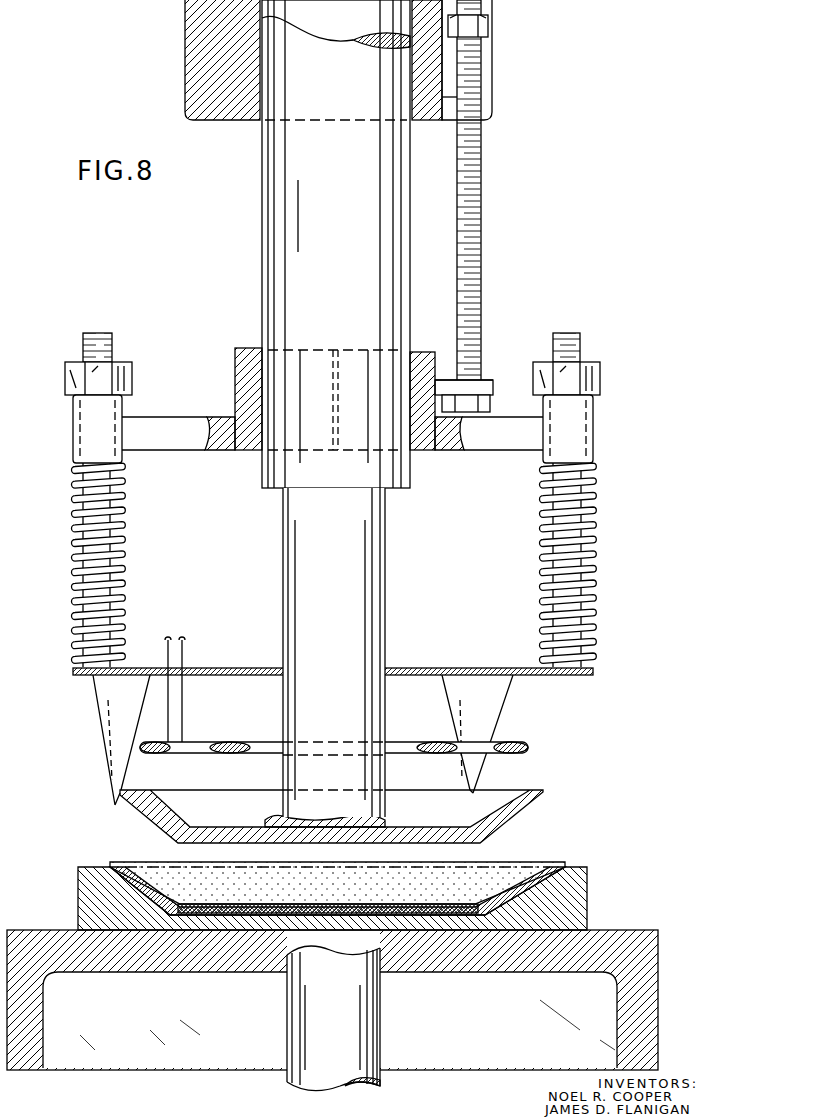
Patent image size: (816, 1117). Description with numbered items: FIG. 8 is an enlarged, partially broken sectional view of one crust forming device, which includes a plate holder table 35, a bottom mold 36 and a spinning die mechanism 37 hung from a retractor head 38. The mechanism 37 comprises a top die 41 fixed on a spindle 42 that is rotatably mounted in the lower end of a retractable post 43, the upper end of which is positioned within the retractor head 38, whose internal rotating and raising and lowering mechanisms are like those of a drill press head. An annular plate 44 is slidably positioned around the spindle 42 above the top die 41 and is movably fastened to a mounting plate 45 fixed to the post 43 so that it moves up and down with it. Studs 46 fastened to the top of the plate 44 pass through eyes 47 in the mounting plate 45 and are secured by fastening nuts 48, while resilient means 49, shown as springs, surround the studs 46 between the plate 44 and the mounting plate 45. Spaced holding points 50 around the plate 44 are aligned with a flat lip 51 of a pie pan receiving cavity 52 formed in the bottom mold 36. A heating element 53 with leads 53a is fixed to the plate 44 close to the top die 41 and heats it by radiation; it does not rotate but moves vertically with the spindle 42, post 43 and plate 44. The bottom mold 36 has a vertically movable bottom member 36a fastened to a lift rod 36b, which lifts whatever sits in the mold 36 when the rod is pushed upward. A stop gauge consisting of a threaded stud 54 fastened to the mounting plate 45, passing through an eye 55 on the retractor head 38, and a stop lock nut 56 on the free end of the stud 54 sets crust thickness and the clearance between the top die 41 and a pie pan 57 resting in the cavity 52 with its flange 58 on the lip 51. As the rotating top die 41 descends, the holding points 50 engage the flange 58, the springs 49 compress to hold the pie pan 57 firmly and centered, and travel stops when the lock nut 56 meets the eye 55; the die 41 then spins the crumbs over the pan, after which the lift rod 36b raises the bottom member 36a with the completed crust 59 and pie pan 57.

The plate holder table 35 is at (658, 950).
The bottom mold 36 is at (587, 890).
The bottom member 36a is at (228, 925).
The lift rod 36b is at (450, 1036).
The spinning die mechanism 37 is at (606, 641).
The retractor head 38 is at (185, 60).
The top die 41 is at (490, 832).
The spindle 42 is at (348, 665).
The retractable post 43 is at (343, 311).
The annular plate 44 is at (593, 676).
The mounting plate 45 is at (493, 414).
The studs 46 is at (75, 545).
The eyes 47 is at (73, 428).
The fastening nuts 48 is at (65, 378).
The resilient means 49 is at (83, 578).
The holding points 50 is at (115, 808).
The flat lip 51 is at (538, 884).
The pie pan receiving cavity 52 is at (458, 917).
The heating element 53 is at (238, 728).
The leads 53a is at (182, 640).
The threaded stud 54 is at (481, 298).
The eye 55 is at (492, 108).
The stop lock nut 56 is at (490, 24).
The pie pan 57 is at (375, 905).
The flange 58 is at (110, 870).
The completed crust 59 is at (162, 863).